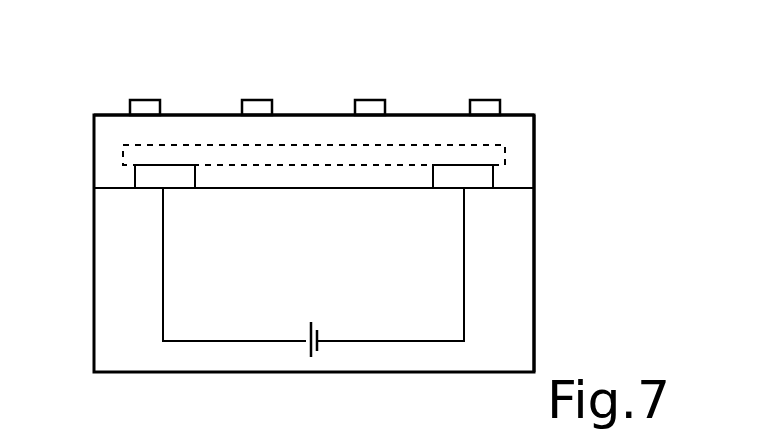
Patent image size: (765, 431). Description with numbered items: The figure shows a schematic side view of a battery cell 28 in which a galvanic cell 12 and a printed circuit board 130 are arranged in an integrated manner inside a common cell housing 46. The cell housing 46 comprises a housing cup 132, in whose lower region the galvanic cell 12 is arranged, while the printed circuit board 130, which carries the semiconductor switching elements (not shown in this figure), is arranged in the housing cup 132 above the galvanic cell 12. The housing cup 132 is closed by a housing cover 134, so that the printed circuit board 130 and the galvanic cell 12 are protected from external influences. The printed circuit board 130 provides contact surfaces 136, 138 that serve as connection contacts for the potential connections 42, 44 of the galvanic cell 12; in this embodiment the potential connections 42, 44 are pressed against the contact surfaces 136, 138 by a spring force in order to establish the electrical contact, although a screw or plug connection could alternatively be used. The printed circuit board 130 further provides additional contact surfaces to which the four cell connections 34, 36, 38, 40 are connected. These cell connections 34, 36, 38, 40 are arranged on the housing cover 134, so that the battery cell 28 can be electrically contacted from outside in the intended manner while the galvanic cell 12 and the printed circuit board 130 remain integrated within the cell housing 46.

The galvanic cell 12 is at (107, 350).
The battery cell 28 is at (210, 96).
The cell connection 34 is at (147, 106).
The cell connection 36 is at (262, 106).
The cell connection 38 is at (374, 106).
The cell connection 40 is at (489, 106).
The potential connection 42 is at (512, 189).
The potential connection 44 is at (140, 178).
The cell housing 46 is at (540, 126).
The printed circuit board 130 is at (507, 152).
The housing cup 132 is at (535, 335).
The housing cover 134 is at (100, 113).
The contact surface 136 is at (466, 167).
The contact surface 138 is at (165, 167).